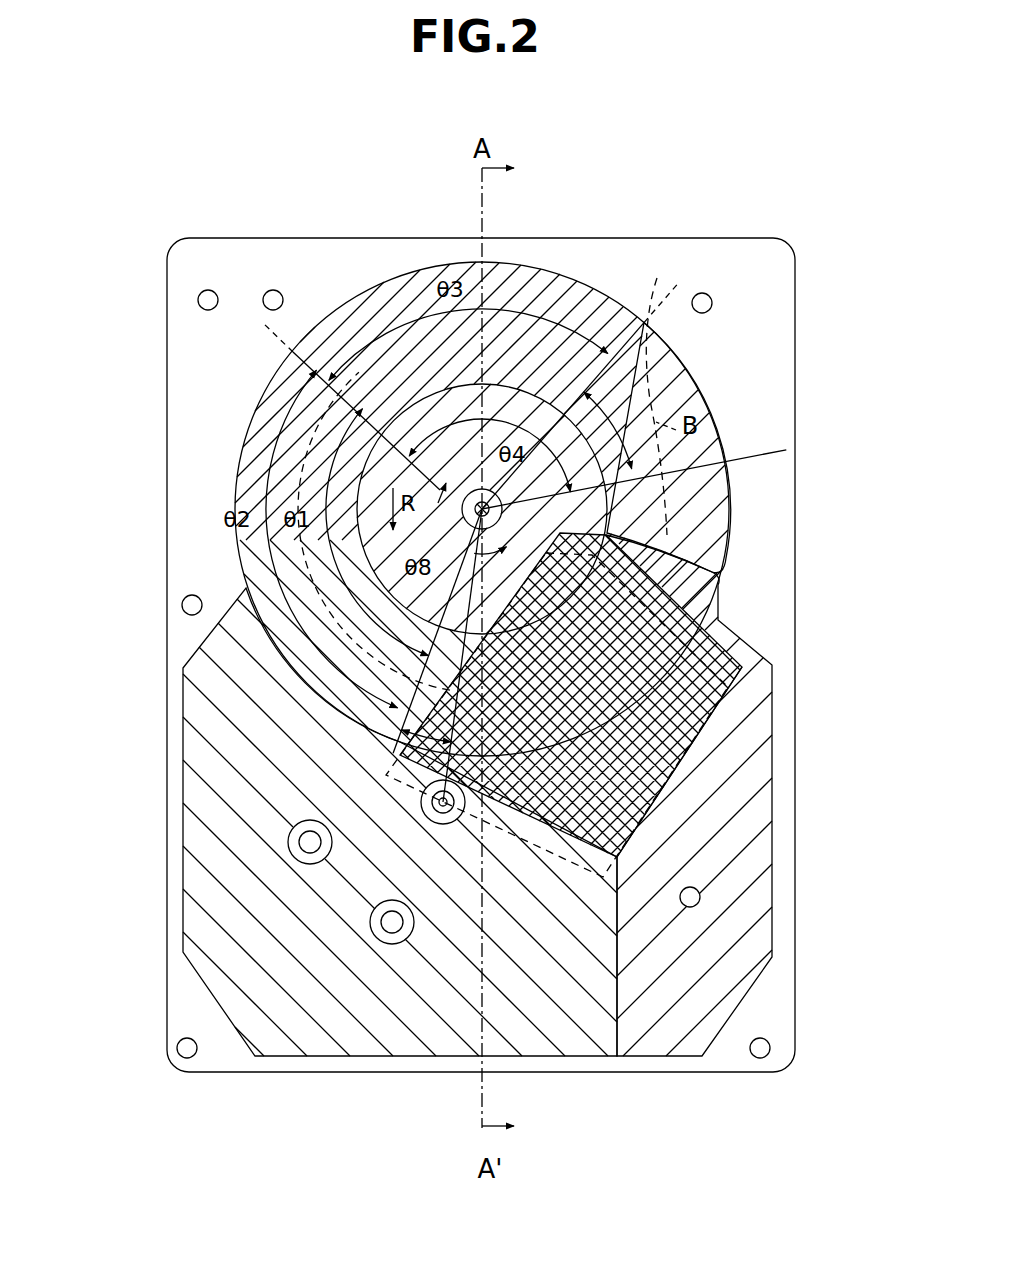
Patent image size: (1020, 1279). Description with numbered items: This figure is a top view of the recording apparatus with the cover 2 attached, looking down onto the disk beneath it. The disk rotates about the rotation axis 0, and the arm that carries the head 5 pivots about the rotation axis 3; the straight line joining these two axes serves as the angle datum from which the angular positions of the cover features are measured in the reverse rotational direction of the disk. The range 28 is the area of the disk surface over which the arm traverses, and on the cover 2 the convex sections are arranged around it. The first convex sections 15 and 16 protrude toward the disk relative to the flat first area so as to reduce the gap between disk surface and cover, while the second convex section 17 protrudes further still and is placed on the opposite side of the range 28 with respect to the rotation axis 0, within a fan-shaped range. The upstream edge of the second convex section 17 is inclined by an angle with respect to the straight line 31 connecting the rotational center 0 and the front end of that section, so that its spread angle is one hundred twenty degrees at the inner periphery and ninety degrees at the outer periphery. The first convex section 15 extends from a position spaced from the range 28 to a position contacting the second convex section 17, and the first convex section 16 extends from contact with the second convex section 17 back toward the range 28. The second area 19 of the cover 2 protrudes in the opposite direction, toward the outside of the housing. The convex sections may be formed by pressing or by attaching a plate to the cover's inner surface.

The rotation axis of the disk 0 is at (462, 516).
The cover 2 is at (200, 487).
The rotation axis of the arm 3 is at (443, 824).
The head 5 is at (742, 645).
The first convex section 15 is at (680, 386).
The first convex section 16 is at (248, 432).
The second convex section 17 is at (543, 289).
The second area 19 is at (205, 922).
The range in which the arm traverses 28 is at (690, 594).
The straight line 31 is at (758, 448).